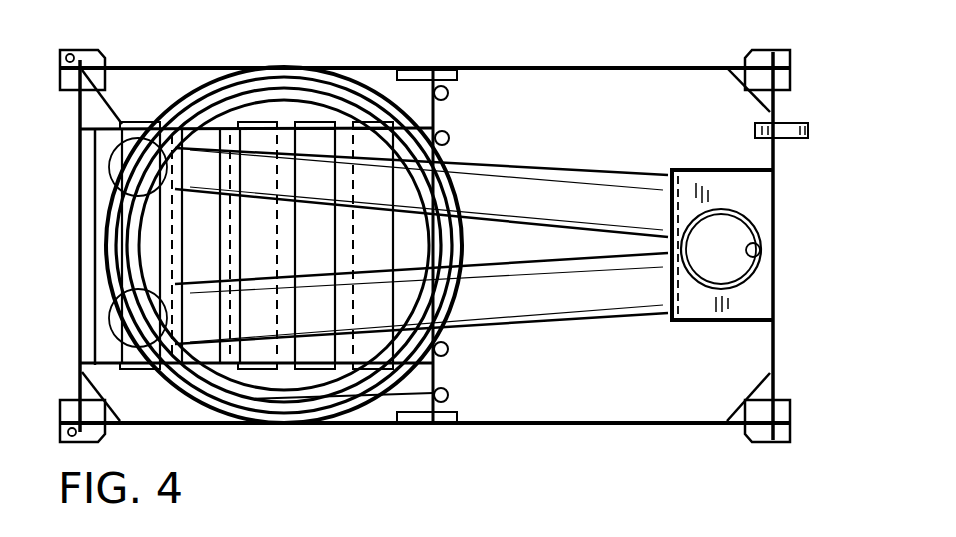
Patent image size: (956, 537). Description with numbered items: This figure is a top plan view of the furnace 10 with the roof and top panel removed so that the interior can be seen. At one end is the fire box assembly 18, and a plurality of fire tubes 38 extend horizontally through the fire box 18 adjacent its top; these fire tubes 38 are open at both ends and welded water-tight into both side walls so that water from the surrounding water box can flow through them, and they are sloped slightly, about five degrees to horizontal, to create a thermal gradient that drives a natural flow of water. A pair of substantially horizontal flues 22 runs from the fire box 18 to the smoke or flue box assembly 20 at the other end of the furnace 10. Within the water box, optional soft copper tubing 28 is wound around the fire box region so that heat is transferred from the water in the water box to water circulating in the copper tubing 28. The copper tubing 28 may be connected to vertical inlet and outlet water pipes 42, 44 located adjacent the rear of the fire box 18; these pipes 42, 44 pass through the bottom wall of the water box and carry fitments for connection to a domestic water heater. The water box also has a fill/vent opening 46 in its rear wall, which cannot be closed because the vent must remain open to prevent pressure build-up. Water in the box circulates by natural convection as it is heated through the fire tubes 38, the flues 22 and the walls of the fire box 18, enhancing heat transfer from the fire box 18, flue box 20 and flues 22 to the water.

The furnace 10 is at (613, 426).
The fire box assembly 18 is at (100, 104).
The flue box assembly 20 is at (725, 323).
The flues 22 is at (565, 168).
The copper tubing 28 is at (352, 100).
The fire tubes 38 is at (250, 123).
The inlet water pipe 42 is at (449, 394).
The outlet water pipe 44 is at (448, 136).
The fill/vent opening 46 is at (785, 124).